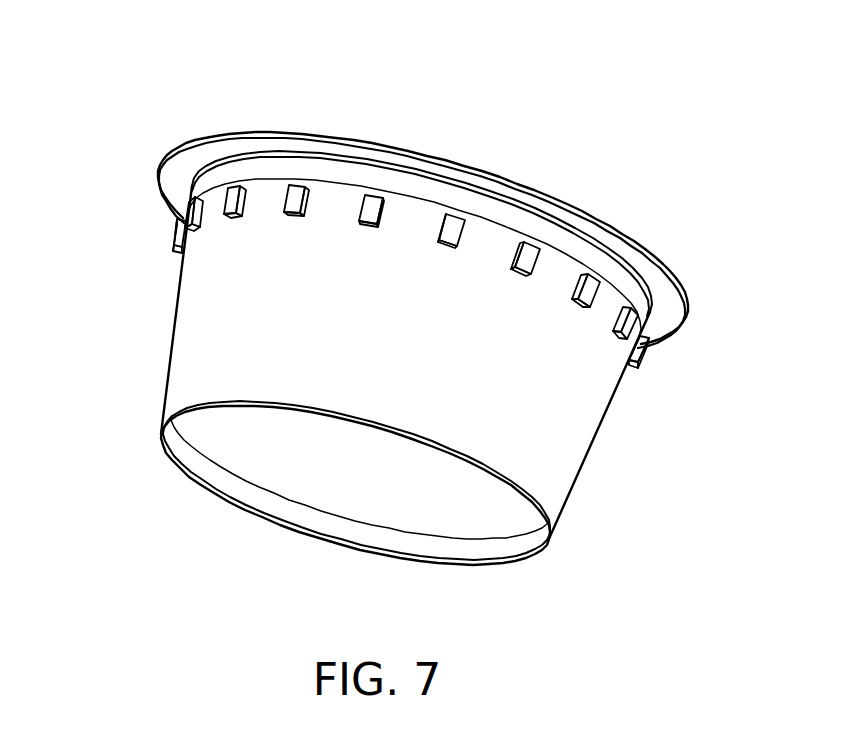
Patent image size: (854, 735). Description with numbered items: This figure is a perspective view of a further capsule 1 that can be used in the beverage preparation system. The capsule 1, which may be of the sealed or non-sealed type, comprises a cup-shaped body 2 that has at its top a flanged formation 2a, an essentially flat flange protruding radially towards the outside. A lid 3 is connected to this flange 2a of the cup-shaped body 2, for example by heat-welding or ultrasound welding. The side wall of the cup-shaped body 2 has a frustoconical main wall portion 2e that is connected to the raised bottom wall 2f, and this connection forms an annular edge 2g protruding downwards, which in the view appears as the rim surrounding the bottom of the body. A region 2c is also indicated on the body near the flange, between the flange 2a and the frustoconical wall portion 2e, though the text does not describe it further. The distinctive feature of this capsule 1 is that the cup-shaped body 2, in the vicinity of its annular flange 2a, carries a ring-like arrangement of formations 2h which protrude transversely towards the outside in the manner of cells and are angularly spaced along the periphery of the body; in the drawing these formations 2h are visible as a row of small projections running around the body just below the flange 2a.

The capsule 1 is at (400, 338).
The cup-shaped body 2 is at (400, 343).
The flanged formation 2a is at (451, 269).
The upper rim portion of body wall 2c is at (419, 198).
The frustoconical main wall portion 2e is at (353, 363).
The raised bottom wall 2f is at (359, 523).
The annular edge 2g is at (355, 491).
The formations 2h is at (390, 311).
The lid 3 is at (423, 215).